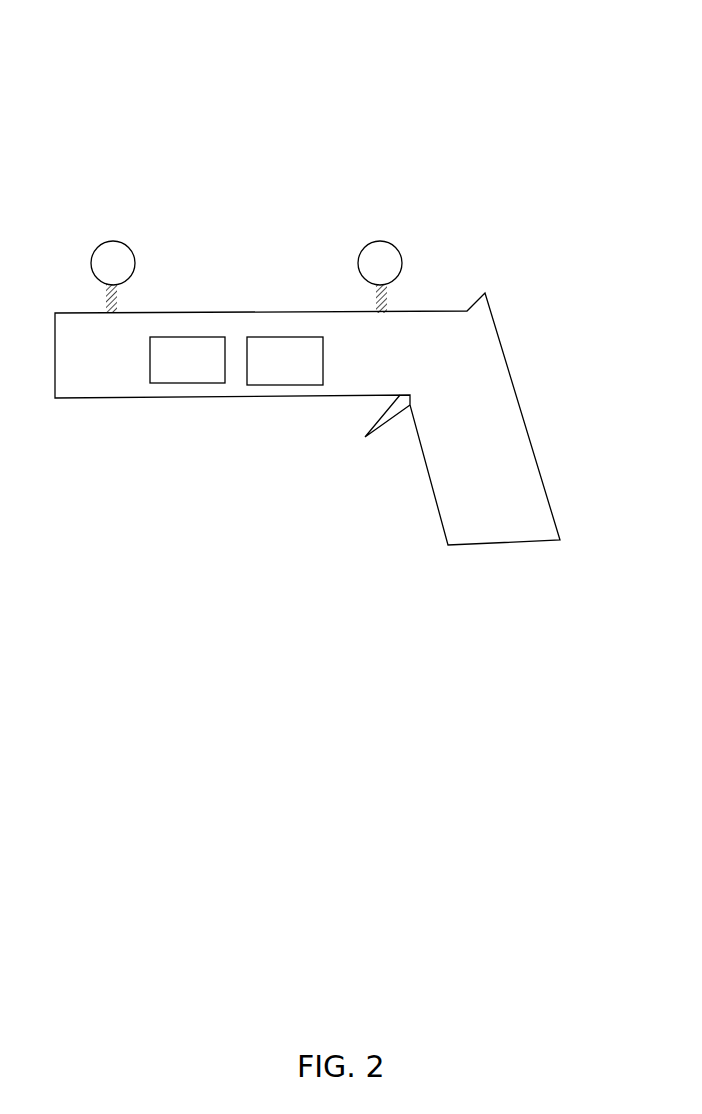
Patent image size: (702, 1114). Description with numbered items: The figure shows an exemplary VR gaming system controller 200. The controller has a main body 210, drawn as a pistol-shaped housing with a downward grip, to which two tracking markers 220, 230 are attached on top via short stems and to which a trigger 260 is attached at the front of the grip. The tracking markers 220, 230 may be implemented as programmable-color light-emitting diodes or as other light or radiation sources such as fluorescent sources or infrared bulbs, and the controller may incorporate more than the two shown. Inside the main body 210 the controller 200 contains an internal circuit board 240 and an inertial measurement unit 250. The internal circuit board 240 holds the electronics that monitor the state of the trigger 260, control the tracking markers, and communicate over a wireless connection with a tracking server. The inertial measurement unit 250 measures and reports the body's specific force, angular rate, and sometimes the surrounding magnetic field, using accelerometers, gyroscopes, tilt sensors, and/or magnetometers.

The VR controller 200 is at (55, 80).
The main body 210 is at (518, 393).
The tracking marker 220 is at (130, 253).
The tracking marker 230 is at (398, 250).
The internal circuit board 240 is at (182, 383).
The inertial measurement unit 250 is at (280, 385).
The trigger 260 is at (380, 437).